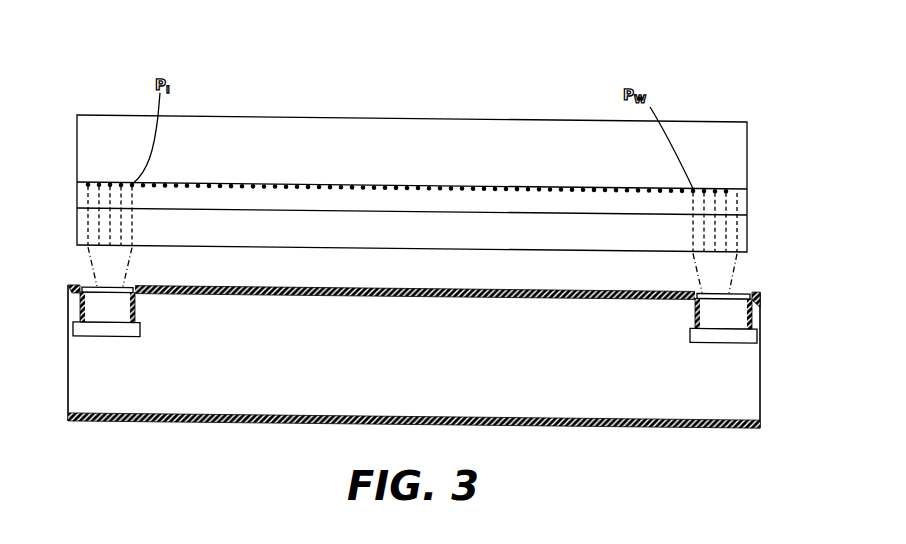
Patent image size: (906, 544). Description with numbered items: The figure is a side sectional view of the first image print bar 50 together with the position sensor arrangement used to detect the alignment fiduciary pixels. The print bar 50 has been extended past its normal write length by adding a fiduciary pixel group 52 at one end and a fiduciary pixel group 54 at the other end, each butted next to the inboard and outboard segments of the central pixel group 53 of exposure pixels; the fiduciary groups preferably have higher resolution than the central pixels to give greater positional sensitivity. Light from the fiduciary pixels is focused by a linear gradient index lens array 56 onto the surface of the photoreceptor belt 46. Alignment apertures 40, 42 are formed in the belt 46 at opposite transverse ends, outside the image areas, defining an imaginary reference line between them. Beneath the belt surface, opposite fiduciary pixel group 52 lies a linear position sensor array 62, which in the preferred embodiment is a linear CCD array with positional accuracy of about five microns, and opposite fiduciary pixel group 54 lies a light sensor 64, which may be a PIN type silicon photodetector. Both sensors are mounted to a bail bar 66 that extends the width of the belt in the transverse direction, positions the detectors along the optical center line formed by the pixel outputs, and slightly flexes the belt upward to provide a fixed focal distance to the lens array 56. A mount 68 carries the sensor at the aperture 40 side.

The alignment aperture 40 is at (93, 287).
The alignment aperture 42 is at (737, 285).
The photoreceptor belt 46 is at (427, 285).
The image print bar 50 is at (383, 115).
The fiduciary pixel group 52 is at (121, 161).
The central pixel group 53 is at (251, 146).
The fiduciary pixel group 54 is at (710, 158).
The linear gradient index lens array 56 is at (492, 234).
The linear position sensor array 62 is at (101, 328).
The light sensor 64 is at (717, 327).
The bail bar 66 is at (320, 294).
The sensor mount 68 is at (136, 307).